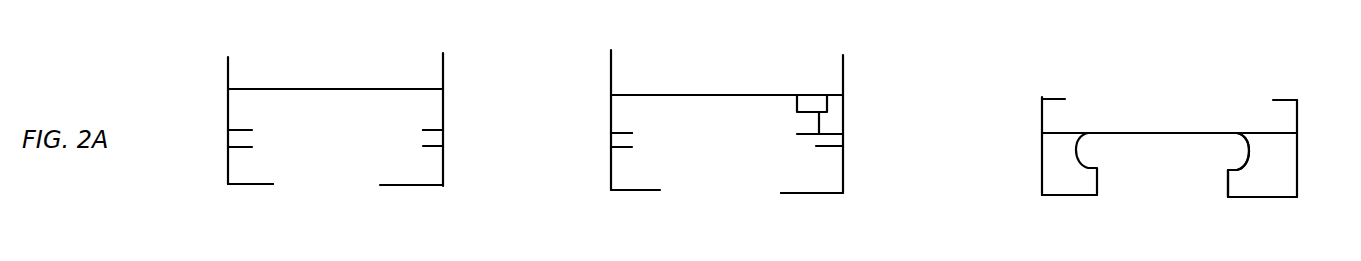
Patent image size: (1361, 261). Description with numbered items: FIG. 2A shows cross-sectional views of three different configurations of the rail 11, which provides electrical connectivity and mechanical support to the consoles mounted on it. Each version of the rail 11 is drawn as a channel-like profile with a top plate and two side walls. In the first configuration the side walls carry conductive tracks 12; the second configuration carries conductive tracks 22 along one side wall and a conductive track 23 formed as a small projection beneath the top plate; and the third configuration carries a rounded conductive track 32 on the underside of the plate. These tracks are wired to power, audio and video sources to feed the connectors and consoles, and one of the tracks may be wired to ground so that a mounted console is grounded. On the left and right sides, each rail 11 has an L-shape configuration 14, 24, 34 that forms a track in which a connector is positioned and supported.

The rail 11 is at (382, 47).
The conductive track 12 is at (440, 138).
The L-shape configuration 14 is at (249, 186).
The conductive track 22 is at (618, 137).
The conductive track 23 is at (805, 125).
The L-shape configuration 24 is at (811, 196).
The conductive track 32 is at (1242, 150).
The L-shape configuration 34 is at (1074, 197).